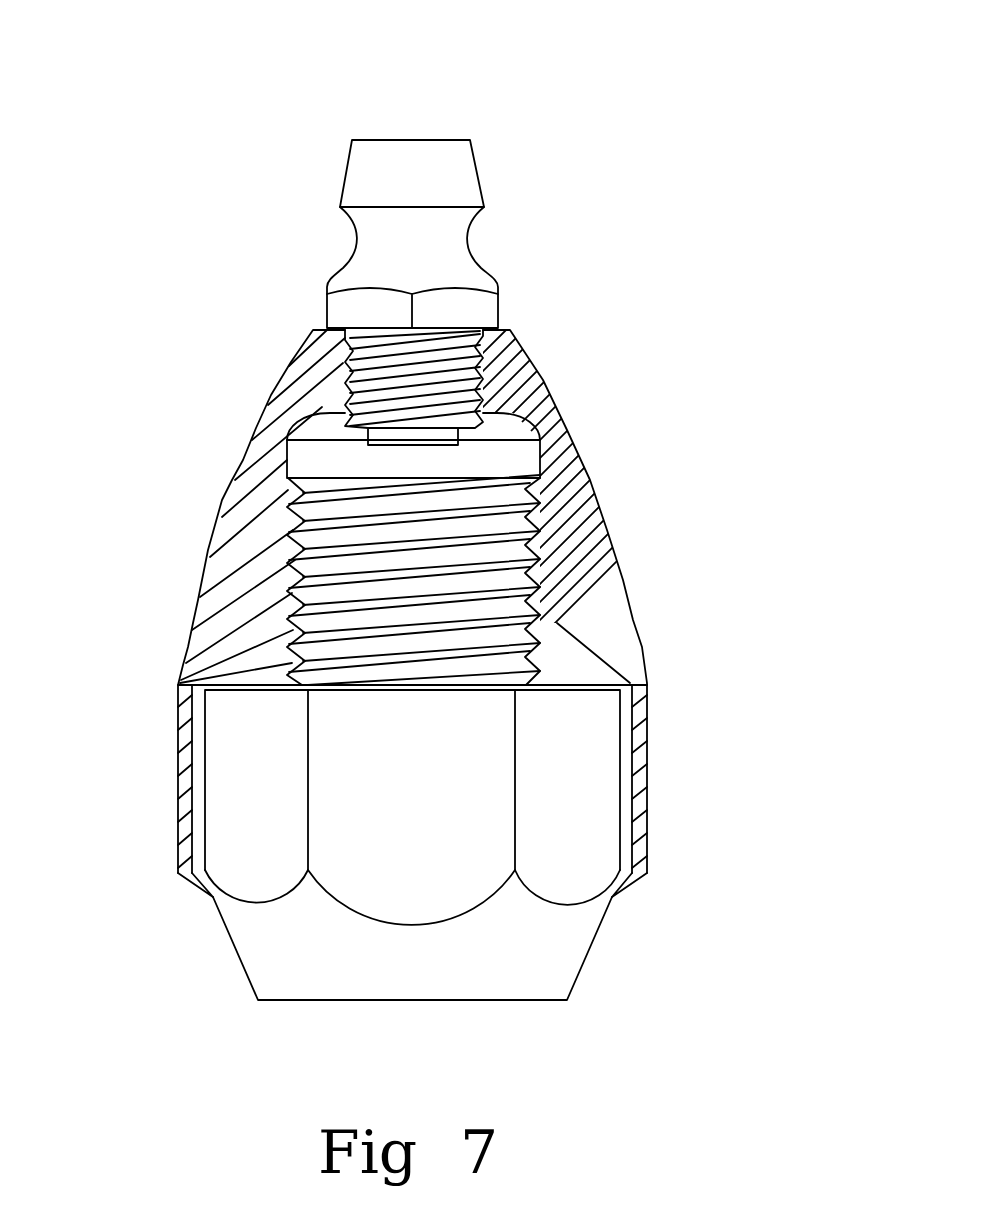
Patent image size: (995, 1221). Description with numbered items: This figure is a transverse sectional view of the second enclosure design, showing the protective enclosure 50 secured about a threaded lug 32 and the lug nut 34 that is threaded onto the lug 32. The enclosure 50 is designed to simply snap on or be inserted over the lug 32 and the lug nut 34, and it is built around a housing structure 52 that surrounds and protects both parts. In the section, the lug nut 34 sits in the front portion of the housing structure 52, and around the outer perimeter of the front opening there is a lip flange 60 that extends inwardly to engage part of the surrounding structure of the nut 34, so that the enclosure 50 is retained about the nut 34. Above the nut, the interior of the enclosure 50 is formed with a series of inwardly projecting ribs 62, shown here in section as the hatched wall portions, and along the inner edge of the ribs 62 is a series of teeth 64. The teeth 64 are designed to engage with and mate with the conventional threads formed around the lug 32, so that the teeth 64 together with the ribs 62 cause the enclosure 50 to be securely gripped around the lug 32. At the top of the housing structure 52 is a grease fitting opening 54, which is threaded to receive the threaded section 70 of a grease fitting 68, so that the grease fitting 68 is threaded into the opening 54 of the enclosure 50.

The protective enclosure 50 is at (286, 93).
The grease fitting 68 is at (385, 173).
The grease fitting opening 54 is at (480, 388).
The threaded section 70 is at (410, 393).
The inwardly projecting ribs 62 is at (580, 457).
The housing structure 52 is at (622, 538).
The teeth 64 is at (541, 570).
The lug 32 is at (430, 648).
The lug nut 34 is at (560, 820).
The lip flange 60 is at (628, 888).